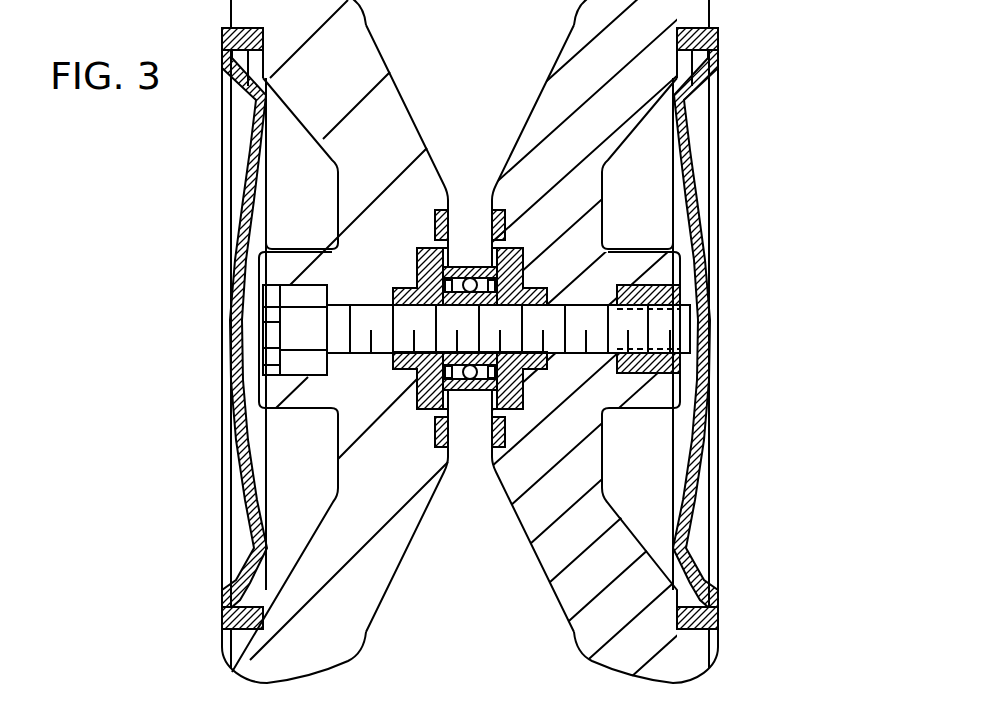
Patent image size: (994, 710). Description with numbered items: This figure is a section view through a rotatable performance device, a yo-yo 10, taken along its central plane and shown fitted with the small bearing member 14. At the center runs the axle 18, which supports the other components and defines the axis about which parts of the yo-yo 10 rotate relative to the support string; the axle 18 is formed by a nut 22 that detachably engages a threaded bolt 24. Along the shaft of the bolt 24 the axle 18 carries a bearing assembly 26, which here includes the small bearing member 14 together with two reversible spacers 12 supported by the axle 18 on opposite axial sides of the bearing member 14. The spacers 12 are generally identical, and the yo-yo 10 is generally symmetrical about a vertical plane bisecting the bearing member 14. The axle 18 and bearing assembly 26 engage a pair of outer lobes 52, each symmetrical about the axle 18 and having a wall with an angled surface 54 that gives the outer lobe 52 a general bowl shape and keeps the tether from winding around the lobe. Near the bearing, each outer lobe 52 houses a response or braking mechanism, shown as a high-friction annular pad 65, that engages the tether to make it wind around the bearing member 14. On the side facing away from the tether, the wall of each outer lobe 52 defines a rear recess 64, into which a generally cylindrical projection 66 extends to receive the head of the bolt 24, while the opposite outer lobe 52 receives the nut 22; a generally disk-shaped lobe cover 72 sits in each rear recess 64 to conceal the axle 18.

The yo-yo 10 is at (766, 86).
The reversible spacers 12 is at (404, 372).
The small bearing member 14 is at (467, 268).
The axle 18 is at (250, 359).
The nut 22 is at (655, 283).
The threaded bolt 24 is at (262, 309).
The bearing assembly 26 is at (463, 404).
The outer lobe 52 is at (377, 603).
The angled surface 54 is at (407, 547).
The rear recess 64 is at (292, 493).
The high-friction annular pad 65 is at (435, 226).
The cylindrical projection 66 is at (290, 412).
The lobe cover 72 is at (244, 170).